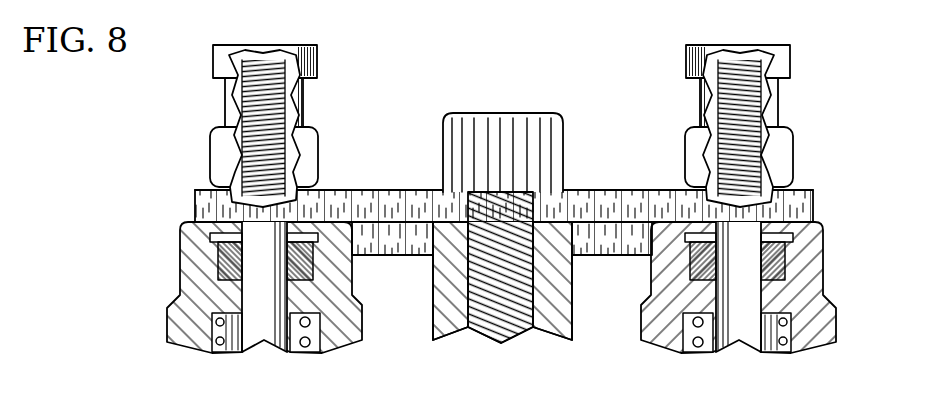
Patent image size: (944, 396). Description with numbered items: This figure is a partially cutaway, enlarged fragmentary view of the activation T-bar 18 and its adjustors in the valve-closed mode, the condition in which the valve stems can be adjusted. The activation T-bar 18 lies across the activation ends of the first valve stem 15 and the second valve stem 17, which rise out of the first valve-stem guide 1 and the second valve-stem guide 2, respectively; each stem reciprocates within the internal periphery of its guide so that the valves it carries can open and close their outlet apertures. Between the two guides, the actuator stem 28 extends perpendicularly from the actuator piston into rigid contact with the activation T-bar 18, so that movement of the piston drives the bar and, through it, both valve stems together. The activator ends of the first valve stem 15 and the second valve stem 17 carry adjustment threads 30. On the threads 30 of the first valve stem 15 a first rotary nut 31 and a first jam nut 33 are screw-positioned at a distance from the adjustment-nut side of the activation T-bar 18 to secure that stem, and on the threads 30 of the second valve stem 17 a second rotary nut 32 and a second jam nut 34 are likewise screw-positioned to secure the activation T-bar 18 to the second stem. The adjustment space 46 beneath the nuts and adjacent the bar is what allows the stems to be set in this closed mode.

The first valve-stem guide 1 is at (180, 297).
The second valve-stem guide 2 is at (836, 308).
The first valve stem 15 is at (268, 263).
The second valve stem 17 is at (740, 282).
The activation T-bar 18 is at (606, 223).
The actuator stem 28 is at (452, 287).
The adjustment threads 30 is at (270, 100).
The first rotary nut 31 is at (210, 142).
The second rotary nut 32 is at (793, 140).
The first jam nut 33 is at (225, 88).
The second jam nut 34 is at (778, 104).
The adjustment space 46 is at (203, 188).